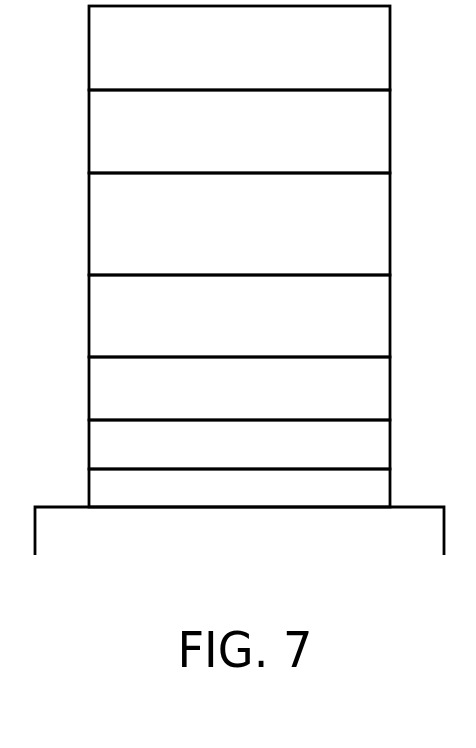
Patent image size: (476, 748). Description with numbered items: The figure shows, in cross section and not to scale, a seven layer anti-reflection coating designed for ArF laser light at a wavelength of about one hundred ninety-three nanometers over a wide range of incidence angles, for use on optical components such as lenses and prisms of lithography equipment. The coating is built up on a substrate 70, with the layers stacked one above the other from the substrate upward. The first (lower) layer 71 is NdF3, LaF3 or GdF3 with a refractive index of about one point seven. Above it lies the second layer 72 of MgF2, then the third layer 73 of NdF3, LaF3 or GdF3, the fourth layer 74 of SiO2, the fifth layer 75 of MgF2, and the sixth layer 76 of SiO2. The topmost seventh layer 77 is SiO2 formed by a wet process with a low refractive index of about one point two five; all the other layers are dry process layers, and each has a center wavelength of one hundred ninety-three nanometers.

The substrate 70 is at (307, 550).
The first (lower) layer 71 is at (224, 504).
The second layer 72 is at (224, 460).
The third layer 73 is at (224, 404).
The fourth layer 74 is at (224, 336).
The fifth layer 75 is at (224, 242).
The sixth layer 76 is at (224, 152).
The seventh layer 77 is at (224, 68).